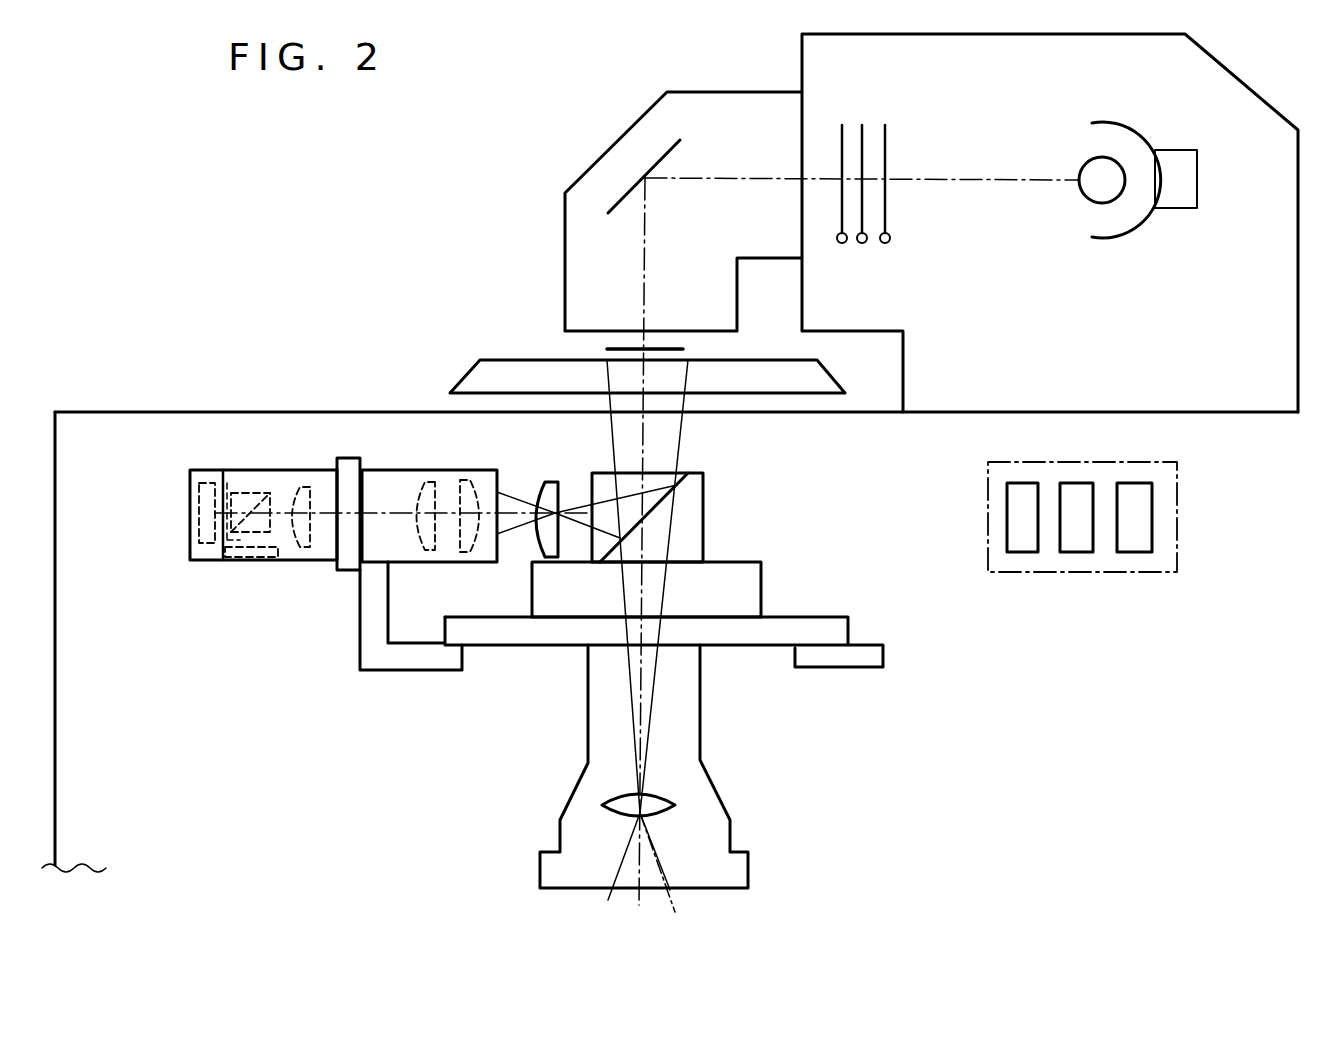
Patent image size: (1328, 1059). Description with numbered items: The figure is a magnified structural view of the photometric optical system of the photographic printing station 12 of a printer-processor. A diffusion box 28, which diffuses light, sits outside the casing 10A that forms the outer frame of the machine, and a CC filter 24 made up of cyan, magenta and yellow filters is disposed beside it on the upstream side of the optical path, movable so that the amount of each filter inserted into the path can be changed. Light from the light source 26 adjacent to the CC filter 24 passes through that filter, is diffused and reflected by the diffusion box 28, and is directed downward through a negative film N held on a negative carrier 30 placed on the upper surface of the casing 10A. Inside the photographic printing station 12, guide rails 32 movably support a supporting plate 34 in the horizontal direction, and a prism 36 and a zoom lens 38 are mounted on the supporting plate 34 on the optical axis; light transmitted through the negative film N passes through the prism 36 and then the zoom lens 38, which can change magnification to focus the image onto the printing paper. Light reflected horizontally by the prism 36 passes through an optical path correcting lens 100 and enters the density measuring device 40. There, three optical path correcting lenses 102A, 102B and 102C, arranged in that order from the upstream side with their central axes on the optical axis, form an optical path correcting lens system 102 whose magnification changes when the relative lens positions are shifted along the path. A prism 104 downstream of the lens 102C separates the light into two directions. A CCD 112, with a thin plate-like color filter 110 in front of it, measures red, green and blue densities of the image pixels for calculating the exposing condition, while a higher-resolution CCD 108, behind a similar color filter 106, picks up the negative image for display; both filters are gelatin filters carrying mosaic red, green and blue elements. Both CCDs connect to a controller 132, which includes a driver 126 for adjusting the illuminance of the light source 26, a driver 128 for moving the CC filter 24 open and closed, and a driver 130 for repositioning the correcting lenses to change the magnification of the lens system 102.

The photographic printing station 12 is at (99, 395).
The casing 10A is at (162, 412).
The diffusion box 28 is at (612, 144).
The light source 26 is at (1143, 123).
The CC filter 24 is at (862, 250).
The negative film N is at (610, 349).
The negative carrier 30 is at (463, 393).
The density measuring device 40 is at (213, 456).
The color filter 106 is at (224, 484).
The CCD 108 is at (200, 506).
The prism 104 is at (262, 492).
The color filter 110 is at (225, 545).
The CCD 112 is at (288, 553).
The optical path correcting lens system 102 is at (487, 403).
The optical path correcting lens 102A is at (459, 480).
The optical path correcting lens 102B is at (415, 488).
The optical path correcting lens 102C is at (312, 484).
The optical path correcting lens 100 is at (549, 482).
The prism 36 is at (700, 537).
The guide rails 32 is at (867, 643).
The supporting plate 34 is at (757, 648).
The zoom lens 38 is at (730, 822).
The controller 132 is at (1178, 528).
The driver for the light source 126 is at (1015, 553).
The driver for the CC filter 128 is at (1075, 553).
The driver for correcting the optical path 130 is at (1135, 553).